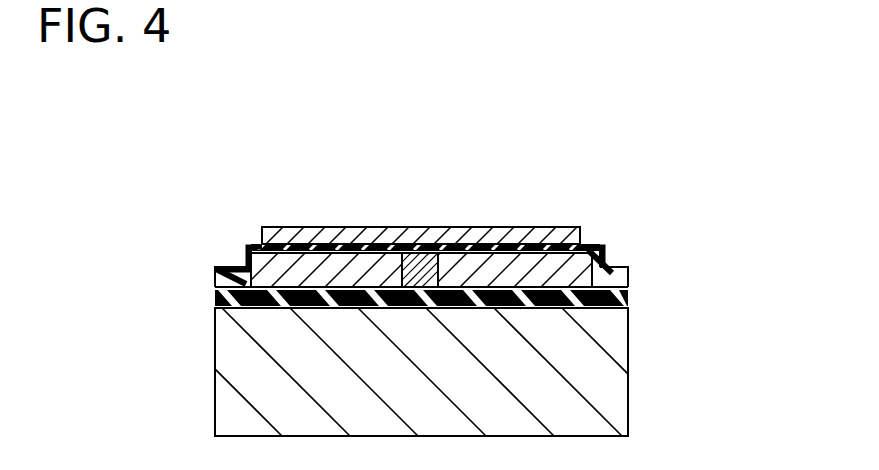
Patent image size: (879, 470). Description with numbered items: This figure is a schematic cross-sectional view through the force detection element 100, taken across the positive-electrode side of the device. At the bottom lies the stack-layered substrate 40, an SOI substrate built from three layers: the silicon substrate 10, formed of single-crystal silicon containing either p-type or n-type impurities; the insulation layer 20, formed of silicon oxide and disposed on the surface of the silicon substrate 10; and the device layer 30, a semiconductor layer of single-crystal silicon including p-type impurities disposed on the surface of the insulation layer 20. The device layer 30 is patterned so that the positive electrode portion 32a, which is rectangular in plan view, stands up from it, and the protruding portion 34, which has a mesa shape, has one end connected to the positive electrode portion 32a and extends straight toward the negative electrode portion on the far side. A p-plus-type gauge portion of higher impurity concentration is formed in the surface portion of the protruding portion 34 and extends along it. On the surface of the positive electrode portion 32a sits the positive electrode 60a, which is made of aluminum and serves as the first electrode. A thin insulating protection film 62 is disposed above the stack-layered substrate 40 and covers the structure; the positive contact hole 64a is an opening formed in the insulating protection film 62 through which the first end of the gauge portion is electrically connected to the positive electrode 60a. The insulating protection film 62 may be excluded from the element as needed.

The force detection element 100 is at (637, 108).
The stack-layered substrate 40 is at (747, 270).
The silicon substrate 10 is at (613, 370).
The insulation layer 20 is at (613, 300).
The device layer 30 is at (613, 279).
The positive electrode portion 32a is at (288, 267).
The protruding portion 34 is at (405, 245).
The positive electrode 60a is at (509, 250).
The insulating protection film 62 is at (600, 250).
The positive contact hole 64a is at (425, 247).